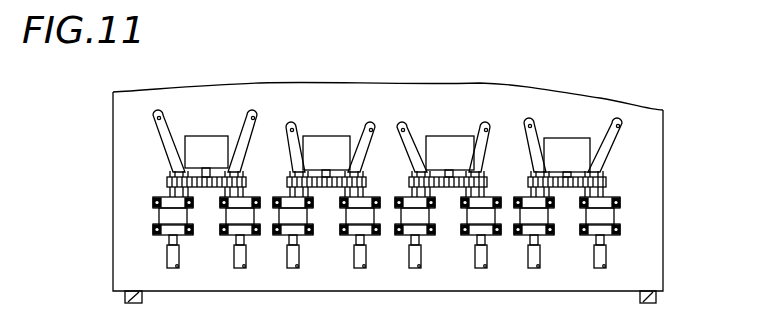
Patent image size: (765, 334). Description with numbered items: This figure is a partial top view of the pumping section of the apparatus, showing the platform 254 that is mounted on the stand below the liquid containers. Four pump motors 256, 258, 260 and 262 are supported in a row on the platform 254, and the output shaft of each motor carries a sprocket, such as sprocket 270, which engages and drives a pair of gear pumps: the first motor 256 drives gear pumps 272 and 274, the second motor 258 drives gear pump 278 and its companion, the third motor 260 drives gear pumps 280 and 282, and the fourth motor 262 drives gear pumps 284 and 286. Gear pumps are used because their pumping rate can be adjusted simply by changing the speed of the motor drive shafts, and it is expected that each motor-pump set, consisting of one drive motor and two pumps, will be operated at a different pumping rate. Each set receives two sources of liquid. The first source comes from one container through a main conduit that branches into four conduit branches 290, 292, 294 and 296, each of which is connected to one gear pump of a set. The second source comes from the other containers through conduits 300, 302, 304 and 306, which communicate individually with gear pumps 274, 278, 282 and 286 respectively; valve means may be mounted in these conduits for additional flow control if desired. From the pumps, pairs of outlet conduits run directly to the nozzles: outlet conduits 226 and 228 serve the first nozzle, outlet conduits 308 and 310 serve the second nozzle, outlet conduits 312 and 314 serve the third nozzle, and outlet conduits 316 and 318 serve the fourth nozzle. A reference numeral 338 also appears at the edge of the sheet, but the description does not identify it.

The platform 254 is at (123, 188).
The conduit branch 290 is at (156, 134).
The pump motor 256 is at (207, 147).
The conduit 300 is at (255, 128).
The conduit branch 292 is at (285, 126).
The pump motor 258 is at (322, 148).
The conduit 302 is at (370, 124).
The conduit branch 294 is at (402, 130).
The pump motor 260 is at (438, 140).
The conduit 304 is at (488, 128).
The conduit branch 296 is at (550, 70).
The pump motor 262 is at (596, 123).
The conduit 306 is at (620, 139).
The gear pump 272 is at (163, 218).
The gear pump 274 is at (226, 218).
The sprocket 270 is at (279, 218).
The gear pump 278 is at (346, 218).
The gear pump 280 is at (401, 218).
The gear pump 282 is at (467, 218).
The gear pump 284 is at (520, 218).
The gear pump 286 is at (586, 218).
The outlet conduit 226 is at (168, 250).
The outlet conduit 228 is at (235, 257).
The outlet conduit 308 is at (288, 257).
The outlet conduit 310 is at (355, 257).
The outlet conduit 312 is at (410, 257).
The outlet conduit 314 is at (476, 257).
The outlet conduit 316 is at (529, 257).
The outlet conduit 318 is at (595, 257).
The numeral 338 is at (62, 328).